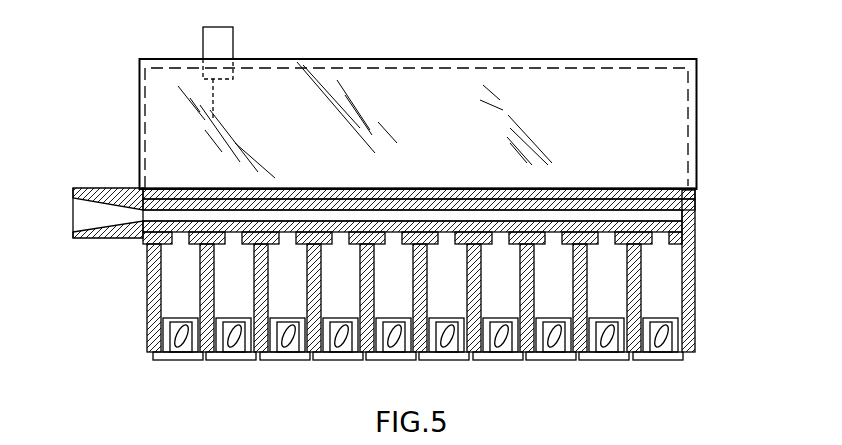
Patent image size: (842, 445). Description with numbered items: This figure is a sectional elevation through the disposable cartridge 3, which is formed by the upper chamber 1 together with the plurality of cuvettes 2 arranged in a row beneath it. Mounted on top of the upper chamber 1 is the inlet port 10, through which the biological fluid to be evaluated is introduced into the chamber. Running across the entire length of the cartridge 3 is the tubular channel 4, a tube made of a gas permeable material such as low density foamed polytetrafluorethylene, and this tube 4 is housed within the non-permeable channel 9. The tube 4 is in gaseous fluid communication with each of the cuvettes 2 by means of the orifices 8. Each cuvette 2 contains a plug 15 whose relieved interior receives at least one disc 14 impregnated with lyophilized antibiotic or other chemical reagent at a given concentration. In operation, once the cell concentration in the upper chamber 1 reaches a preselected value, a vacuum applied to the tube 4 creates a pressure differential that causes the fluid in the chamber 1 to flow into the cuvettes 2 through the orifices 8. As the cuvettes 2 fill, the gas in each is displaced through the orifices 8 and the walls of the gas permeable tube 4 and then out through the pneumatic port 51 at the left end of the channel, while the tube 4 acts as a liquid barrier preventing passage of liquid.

The upper chamber 1 is at (673, 104).
The disposable cartridge 3 is at (697, 157).
The inlet port 10 is at (237, 55).
The pneumatic port 51 is at (82, 220).
The non-permeable channel 9 is at (378, 197).
The tubular channel 4 is at (662, 215).
The orifices 8 is at (660, 247).
The cuvettes 2 is at (182, 290).
The discs 14 is at (607, 363).
The plug 15 is at (155, 355).